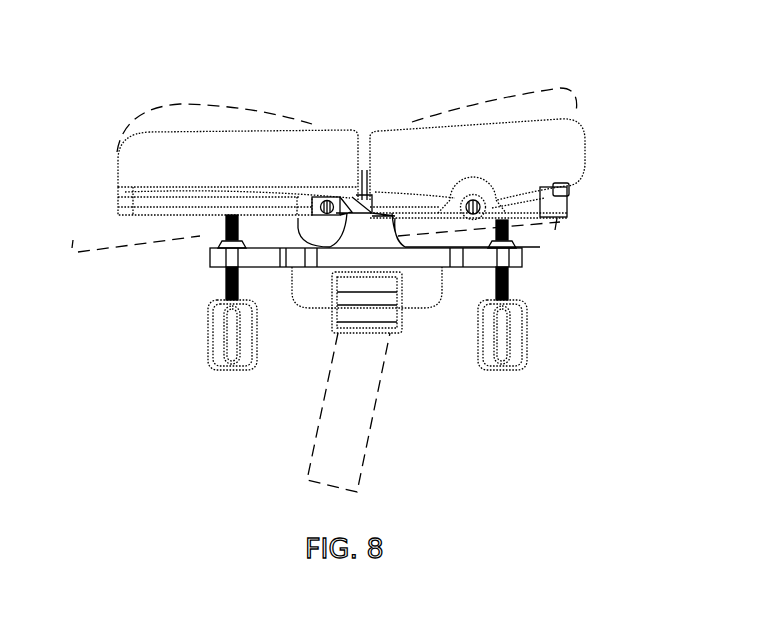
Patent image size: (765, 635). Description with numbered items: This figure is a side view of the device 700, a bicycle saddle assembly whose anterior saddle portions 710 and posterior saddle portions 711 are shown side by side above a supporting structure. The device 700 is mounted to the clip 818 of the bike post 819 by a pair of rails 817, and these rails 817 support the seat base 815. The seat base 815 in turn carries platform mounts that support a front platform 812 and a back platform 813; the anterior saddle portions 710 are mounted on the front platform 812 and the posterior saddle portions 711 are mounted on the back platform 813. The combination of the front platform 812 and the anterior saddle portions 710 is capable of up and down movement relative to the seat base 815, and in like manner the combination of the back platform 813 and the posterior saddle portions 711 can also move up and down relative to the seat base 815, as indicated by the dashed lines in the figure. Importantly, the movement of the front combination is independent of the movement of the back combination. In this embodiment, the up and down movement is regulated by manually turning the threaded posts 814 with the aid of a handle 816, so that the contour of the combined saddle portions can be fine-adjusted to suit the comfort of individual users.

The device 700 is at (158, 88).
The anterior saddle portion 710 is at (236, 147).
The posterior saddle portion 711 is at (446, 155).
The front platform 812 is at (157, 205).
The back platform 813 is at (548, 205).
The threaded post 814 is at (222, 277).
The seat base 815 is at (514, 262).
The handle 816 is at (212, 340).
The rail 817 is at (417, 307).
The clip 818 is at (347, 323).
The bike post 819 is at (355, 405).